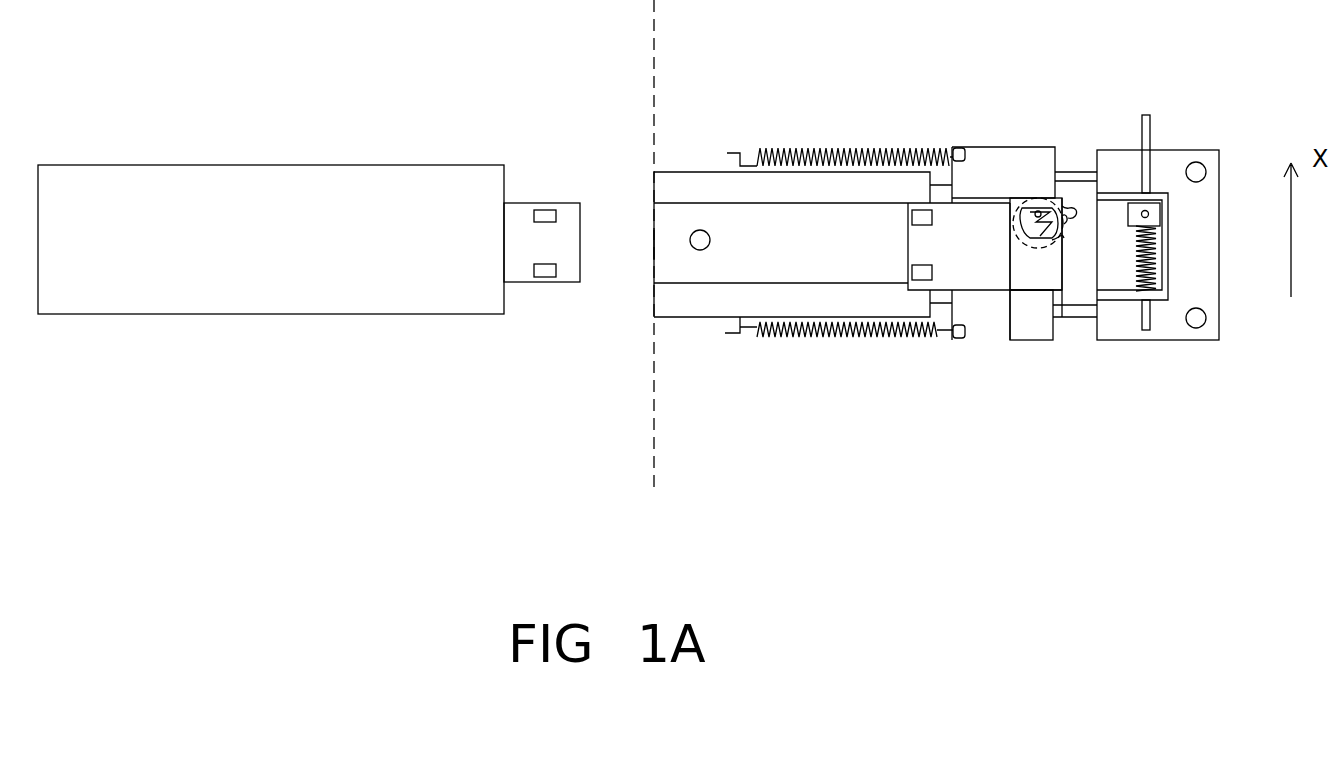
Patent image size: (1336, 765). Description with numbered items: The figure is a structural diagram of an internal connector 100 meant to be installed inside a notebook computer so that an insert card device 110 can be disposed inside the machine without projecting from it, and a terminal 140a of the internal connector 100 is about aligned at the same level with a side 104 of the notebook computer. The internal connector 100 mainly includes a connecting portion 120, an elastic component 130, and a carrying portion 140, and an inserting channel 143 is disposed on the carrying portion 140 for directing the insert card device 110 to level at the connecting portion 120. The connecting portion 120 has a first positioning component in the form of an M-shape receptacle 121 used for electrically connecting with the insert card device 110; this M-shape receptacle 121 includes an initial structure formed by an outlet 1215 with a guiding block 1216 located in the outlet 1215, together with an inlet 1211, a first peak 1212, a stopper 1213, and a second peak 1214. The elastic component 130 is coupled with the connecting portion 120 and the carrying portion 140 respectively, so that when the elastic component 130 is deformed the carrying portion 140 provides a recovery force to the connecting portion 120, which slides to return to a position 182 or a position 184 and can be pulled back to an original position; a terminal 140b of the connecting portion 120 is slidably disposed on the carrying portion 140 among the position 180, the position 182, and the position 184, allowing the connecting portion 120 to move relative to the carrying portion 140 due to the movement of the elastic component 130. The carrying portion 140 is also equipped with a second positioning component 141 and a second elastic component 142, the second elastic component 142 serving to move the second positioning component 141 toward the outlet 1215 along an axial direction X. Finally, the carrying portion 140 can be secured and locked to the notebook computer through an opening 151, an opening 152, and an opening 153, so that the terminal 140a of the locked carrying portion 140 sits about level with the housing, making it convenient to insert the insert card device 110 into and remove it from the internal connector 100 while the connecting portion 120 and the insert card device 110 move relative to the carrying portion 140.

The internal connector 100 is at (910, 305).
The side 104 is at (654, 58).
The insert card device 110 is at (313, 256).
The connecting portion 120 is at (993, 258).
The M-shape receptacle 121 is at (1031, 203).
The inlet 1211 is at (1064, 238).
The first peak 1212 is at (1030, 341).
The stopper 1213 is at (1030, 213).
The second peak 1214 is at (1036, 210).
The outlet 1215 is at (1064, 216).
The guiding block 1216 is at (1066, 212).
The elastic component 130 is at (786, 149).
The carrying portion 140 is at (853, 258).
The terminal 140a is at (653, 214).
The terminal 140b is at (1063, 273).
The second positioning component 141 is at (1148, 210).
The second elastic component 142 is at (1163, 251).
The inserting channel 143 is at (654, 276).
The opening 151 is at (1209, 176).
The opening 152 is at (1206, 335).
The opening 153 is at (696, 250).
The position 180 is at (1145, 341).
The position 182 is at (1169, 301).
The position 184 is at (1062, 341).